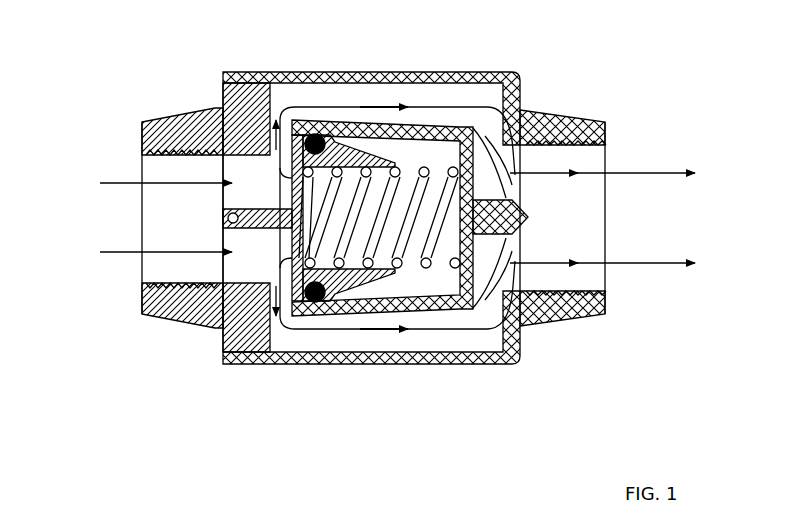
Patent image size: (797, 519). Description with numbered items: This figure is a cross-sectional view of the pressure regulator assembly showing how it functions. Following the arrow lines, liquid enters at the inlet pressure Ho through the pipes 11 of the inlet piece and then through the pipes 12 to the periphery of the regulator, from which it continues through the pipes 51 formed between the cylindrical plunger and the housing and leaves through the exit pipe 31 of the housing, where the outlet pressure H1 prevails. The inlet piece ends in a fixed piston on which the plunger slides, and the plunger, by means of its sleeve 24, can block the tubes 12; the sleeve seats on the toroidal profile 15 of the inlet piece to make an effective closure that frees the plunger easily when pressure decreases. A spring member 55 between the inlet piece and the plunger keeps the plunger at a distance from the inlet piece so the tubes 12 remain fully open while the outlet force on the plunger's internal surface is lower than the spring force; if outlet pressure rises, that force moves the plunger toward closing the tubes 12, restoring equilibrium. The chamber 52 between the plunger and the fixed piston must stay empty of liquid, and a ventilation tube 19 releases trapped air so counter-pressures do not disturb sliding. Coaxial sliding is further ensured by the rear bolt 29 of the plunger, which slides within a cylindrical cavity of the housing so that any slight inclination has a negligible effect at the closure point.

The pipes 11 is at (243, 242).
The pipes 12 is at (268, 128).
The toroidal profile 15 is at (274, 313).
The ventilation tube 19 is at (266, 213).
The sleeve 24 is at (301, 306).
The rear bolt 29 is at (523, 233).
The exit pipe 31 is at (572, 117).
The pipes 51 is at (398, 90).
The chamber 52 is at (432, 152).
The spring member 55 is at (437, 232).
The outlet pressure H1 is at (283, 103).
The inlet pressure Ho is at (205, 221).